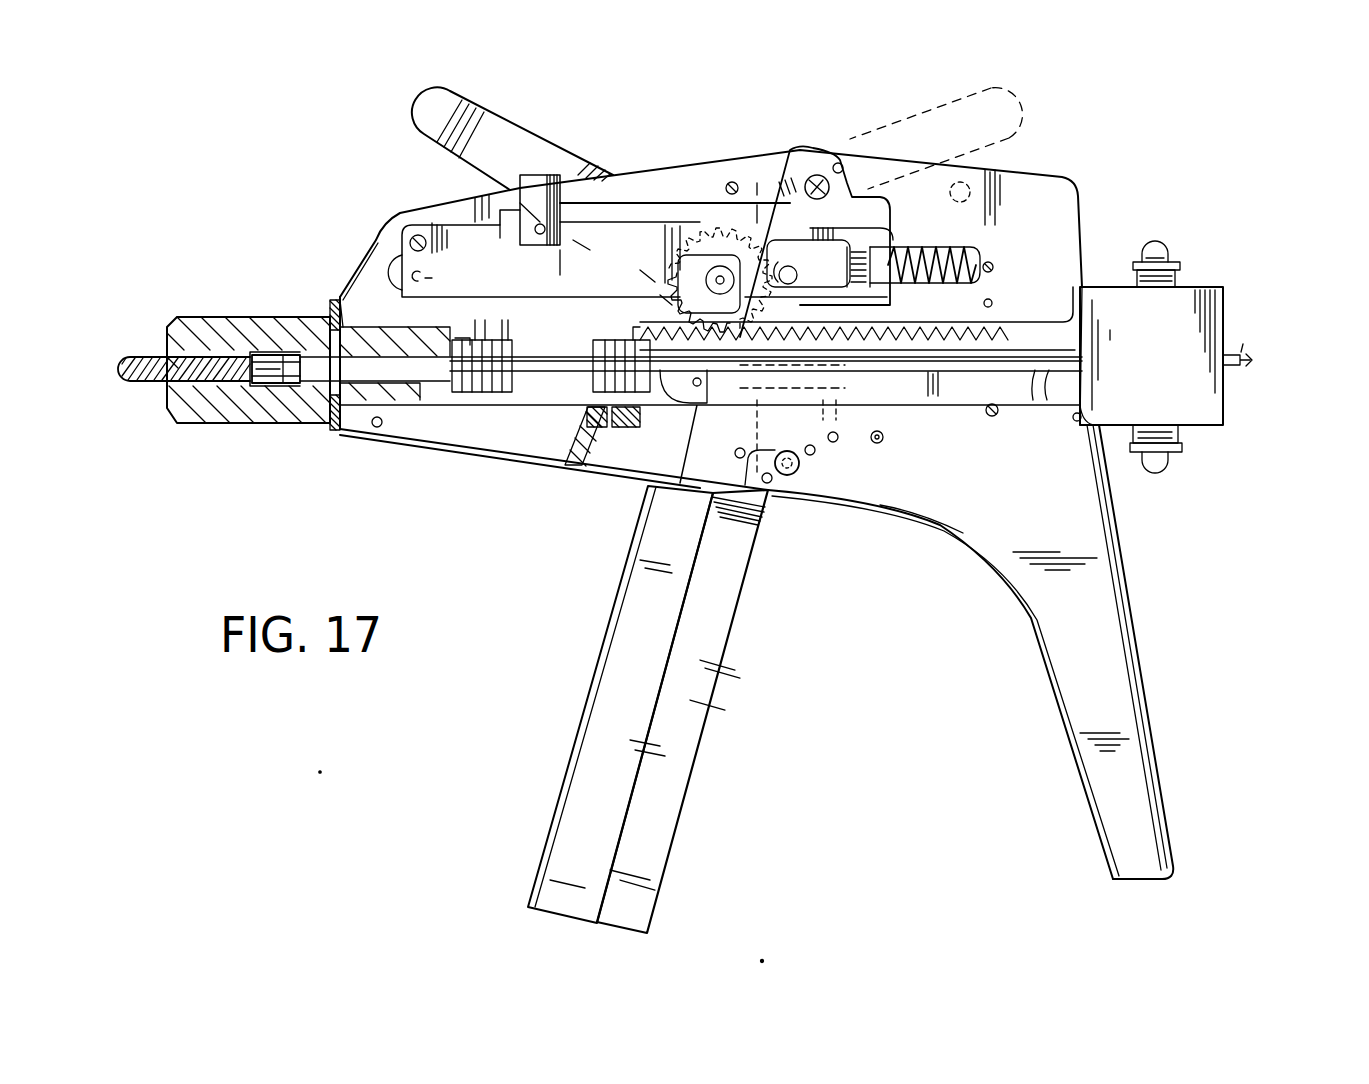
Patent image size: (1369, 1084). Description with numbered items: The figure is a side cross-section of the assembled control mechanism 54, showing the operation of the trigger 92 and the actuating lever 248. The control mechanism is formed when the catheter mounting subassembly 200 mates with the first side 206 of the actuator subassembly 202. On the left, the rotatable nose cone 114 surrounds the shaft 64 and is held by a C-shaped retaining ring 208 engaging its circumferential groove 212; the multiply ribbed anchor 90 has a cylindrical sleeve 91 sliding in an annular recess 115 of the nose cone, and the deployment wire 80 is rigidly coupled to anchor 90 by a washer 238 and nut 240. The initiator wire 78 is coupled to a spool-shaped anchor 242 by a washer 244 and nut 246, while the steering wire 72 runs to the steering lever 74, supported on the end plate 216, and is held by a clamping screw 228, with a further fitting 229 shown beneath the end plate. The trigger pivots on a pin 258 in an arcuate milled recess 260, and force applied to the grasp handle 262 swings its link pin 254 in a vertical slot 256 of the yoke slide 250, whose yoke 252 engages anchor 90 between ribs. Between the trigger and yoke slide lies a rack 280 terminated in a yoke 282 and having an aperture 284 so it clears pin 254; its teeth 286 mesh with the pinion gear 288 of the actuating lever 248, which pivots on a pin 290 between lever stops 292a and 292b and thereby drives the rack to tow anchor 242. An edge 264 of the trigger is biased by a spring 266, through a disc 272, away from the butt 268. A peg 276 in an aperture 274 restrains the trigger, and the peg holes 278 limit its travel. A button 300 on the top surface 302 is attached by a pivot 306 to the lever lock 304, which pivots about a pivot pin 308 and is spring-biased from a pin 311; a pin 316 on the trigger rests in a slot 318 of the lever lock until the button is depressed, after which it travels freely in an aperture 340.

The control mechanism 54 is at (372, 240).
The shaft 64 is at (153, 380).
The steering wire 72 is at (1004, 402).
The steering lever 74 is at (1178, 278).
The initiator wire 78 is at (574, 372).
The deployment wire 80 is at (281, 355).
The multiply ribbed anchor 90 is at (455, 340).
The cylindrical sleeve 91 is at (418, 372).
The trigger 92 is at (720, 645).
The nose cone 114 is at (250, 417).
The annular recess 115 is at (243, 353).
The catheter mounting subassembly 200 is at (1226, 406).
The actuator subassembly 202 is at (1064, 178).
The first side 206 is at (1040, 508).
The C-shaped retaining ring 208 is at (333, 428).
The circumferential groove 212 is at (319, 283).
The end plate 216 is at (1212, 310).
The clamping screw 228 is at (1150, 250).
The nut 229 is at (1156, 463).
The washer 238 is at (508, 398).
The nut 240 is at (503, 338).
The spool-shaped anchor 242 is at (610, 350).
The washer 244 is at (605, 428).
The nut 246 is at (593, 407).
The actuating lever 248 is at (492, 124).
The yoke slide 250 is at (825, 414).
The yoke 252 is at (473, 337).
The link pin 254 is at (715, 408).
The vertical slots 256 is at (690, 400).
The pin 258 is at (816, 174).
The arcuate shaped milled recess 260 is at (842, 165).
The grasp handle 262 is at (598, 715).
The edge 264 is at (855, 200).
The spring 266 is at (977, 265).
The butt 268 is at (1154, 834).
The disc 272 is at (815, 241).
The aperture 274 is at (740, 456).
The peg 276 is at (790, 478).
The peg holes 278 is at (877, 443).
The rack 280 is at (1005, 320).
The yoke 282 is at (640, 320).
The aperture 284 is at (845, 382).
The teeth 286 is at (918, 288).
The pinion gear 288 is at (757, 175).
The pin 290 is at (720, 266).
The lever stop 292a is at (997, 197).
The lever stop 292b is at (658, 244).
The button 300 is at (552, 175).
The top surface 302 is at (613, 200).
The lever lock 304 is at (440, 274).
The pivot 306 is at (573, 240).
The pivot pin 308 is at (418, 234).
The pin 311 is at (455, 265).
The pin 316 is at (788, 285).
The slot 318 is at (797, 272).
The aperture 340 is at (880, 265).